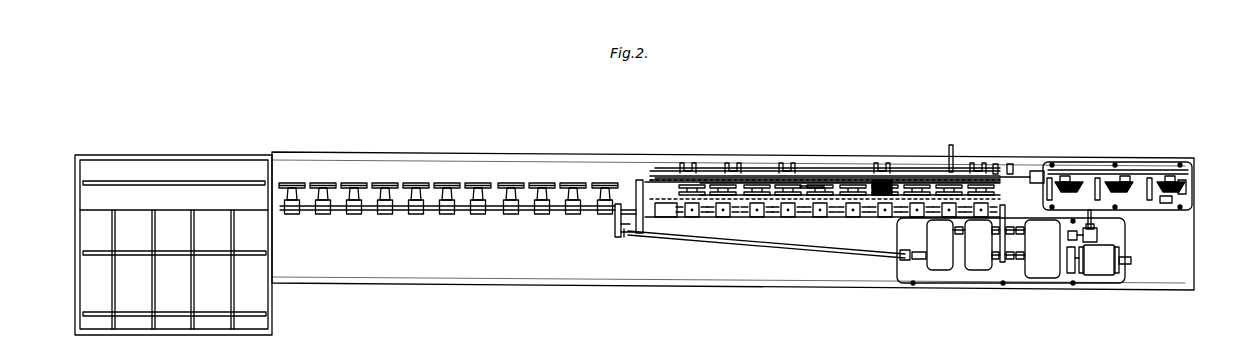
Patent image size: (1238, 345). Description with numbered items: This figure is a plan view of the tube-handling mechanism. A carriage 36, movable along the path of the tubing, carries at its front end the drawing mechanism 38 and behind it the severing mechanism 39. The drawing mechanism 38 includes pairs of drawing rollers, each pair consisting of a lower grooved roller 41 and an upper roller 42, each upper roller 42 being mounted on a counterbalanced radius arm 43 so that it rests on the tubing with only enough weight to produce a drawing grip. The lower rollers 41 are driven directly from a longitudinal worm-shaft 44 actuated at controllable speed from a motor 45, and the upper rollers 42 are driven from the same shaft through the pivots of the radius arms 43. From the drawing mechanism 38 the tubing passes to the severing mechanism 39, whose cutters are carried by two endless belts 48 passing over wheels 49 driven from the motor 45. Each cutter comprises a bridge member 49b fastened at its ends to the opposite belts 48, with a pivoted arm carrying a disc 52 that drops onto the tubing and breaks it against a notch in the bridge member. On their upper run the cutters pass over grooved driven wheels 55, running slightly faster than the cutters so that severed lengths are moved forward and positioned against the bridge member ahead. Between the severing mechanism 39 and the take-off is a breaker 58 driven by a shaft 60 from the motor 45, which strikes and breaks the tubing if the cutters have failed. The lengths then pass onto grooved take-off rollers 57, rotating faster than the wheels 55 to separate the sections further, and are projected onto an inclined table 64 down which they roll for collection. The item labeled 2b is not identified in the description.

The inclined table 64 is at (181, 167).
The grooved rollers of a take-off 57 is at (588, 184).
The breaker 58 is at (629, 198).
The shaft 60 is at (775, 239).
The wheels 49 is at (653, 180).
The bridge member 49b is at (915, 142).
The endless belts 48 is at (742, 182).
The grooved driven wheels 55 is at (813, 187).
The disc 52 is at (882, 190).
The severing mechanism 39 is at (827, 139).
The sheet stack 2b is at (808, 136).
The carriage 36 is at (1163, 285).
The motor 45 is at (1100, 270).
The longitudinal worm-shaft 44 is at (1107, 213).
The drawing mechanism 38 is at (1125, 171).
The counterbalanced radius arm 43 is at (1068, 178).
The lower grooved roller 41 is at (1185, 187).
The upper roller 42 is at (1168, 201).